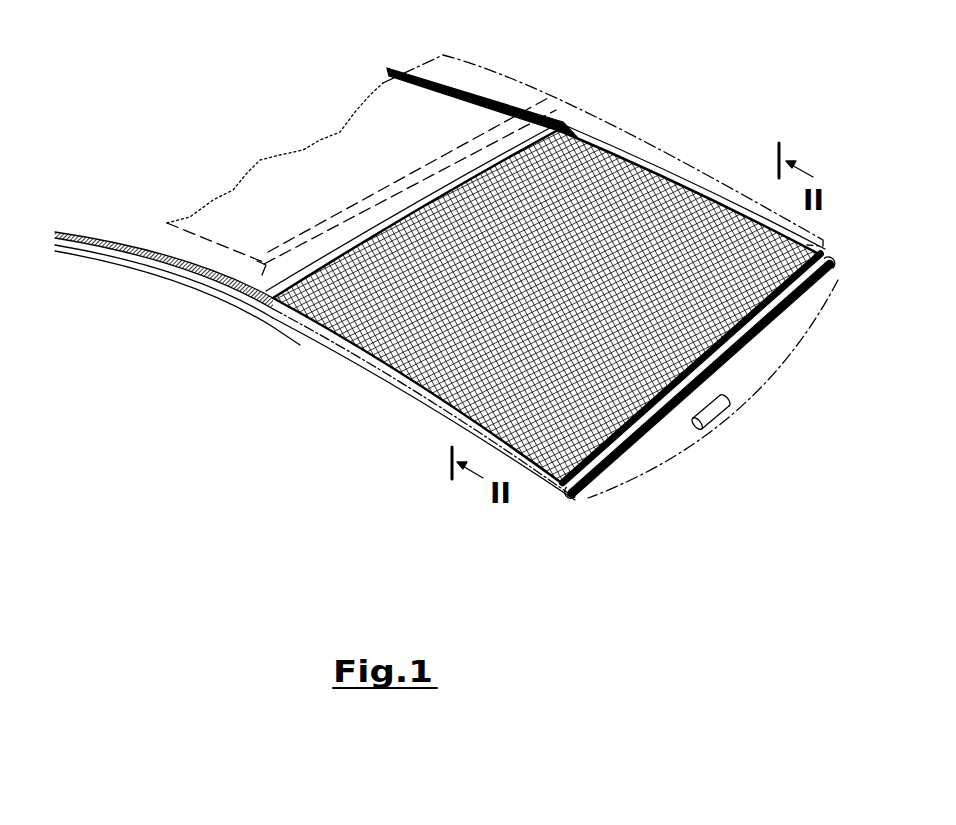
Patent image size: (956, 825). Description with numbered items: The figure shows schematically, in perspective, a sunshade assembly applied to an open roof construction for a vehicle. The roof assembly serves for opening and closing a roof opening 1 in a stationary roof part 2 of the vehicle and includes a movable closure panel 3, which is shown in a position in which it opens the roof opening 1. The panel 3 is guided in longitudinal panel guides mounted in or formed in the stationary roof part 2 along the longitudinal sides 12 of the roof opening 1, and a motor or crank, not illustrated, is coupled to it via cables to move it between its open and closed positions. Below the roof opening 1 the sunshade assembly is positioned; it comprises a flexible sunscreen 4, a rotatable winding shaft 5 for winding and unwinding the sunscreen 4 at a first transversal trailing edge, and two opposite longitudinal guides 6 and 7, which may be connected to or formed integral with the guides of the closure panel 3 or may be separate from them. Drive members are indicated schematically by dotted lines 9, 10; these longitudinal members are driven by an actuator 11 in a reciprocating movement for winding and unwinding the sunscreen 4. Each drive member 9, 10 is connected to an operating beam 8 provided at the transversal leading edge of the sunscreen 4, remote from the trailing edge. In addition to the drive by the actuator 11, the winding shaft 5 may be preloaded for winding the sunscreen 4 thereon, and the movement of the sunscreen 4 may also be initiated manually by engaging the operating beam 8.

The roof opening 1 is at (517, 137).
The stationary roof part 2 is at (595, 86).
The movable closure panel 3 is at (457, 77).
The flexible sunscreen 4 is at (628, 185).
The rotatable winding shaft 5 is at (650, 440).
The longitudinal guide 6 is at (397, 378).
The longitudinal guide 7 is at (680, 173).
The operating beam 8 is at (413, 203).
The drive member 9 is at (350, 338).
The drive member 10 is at (775, 358).
The actuator 11 is at (712, 410).
The longitudinal sides 12 is at (723, 178).